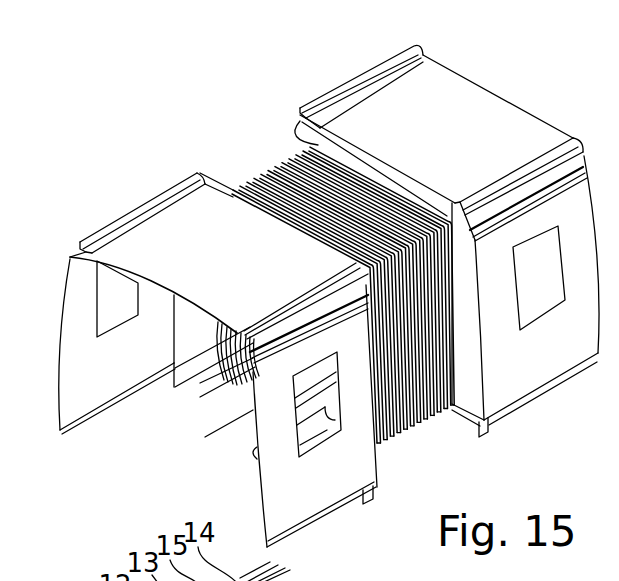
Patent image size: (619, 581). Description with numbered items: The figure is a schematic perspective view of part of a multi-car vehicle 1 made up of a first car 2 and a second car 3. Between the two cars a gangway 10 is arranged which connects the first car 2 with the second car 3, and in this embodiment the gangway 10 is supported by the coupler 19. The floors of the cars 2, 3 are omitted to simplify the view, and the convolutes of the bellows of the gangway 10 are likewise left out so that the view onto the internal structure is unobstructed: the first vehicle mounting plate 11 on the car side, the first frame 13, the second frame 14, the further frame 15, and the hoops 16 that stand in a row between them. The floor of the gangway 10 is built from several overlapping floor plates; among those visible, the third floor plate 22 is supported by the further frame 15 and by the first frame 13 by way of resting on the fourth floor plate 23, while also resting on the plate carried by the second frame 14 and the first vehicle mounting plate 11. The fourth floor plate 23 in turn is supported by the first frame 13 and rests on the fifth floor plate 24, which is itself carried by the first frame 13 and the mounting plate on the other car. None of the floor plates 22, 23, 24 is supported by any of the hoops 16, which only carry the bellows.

The multi-car vehicle 1 is at (221, 93).
The first car 2 is at (507, 130).
The second car 3 is at (163, 240).
The gangway 10 is at (210, 134).
The first vehicle mounting plate 11 is at (298, 128).
The first frame 13 is at (245, 187).
The second frame 14 is at (288, 150).
The further frame 15 is at (270, 168).
The hoops 16 is at (403, 432).
The coupler 19 is at (252, 455).
The third floor plate 22 is at (331, 391).
The fourth floor plate 23 is at (232, 381).
The fifth floor plate 24 is at (250, 388).